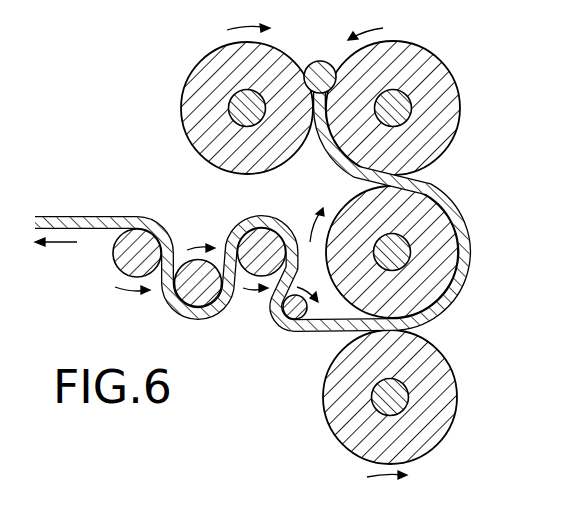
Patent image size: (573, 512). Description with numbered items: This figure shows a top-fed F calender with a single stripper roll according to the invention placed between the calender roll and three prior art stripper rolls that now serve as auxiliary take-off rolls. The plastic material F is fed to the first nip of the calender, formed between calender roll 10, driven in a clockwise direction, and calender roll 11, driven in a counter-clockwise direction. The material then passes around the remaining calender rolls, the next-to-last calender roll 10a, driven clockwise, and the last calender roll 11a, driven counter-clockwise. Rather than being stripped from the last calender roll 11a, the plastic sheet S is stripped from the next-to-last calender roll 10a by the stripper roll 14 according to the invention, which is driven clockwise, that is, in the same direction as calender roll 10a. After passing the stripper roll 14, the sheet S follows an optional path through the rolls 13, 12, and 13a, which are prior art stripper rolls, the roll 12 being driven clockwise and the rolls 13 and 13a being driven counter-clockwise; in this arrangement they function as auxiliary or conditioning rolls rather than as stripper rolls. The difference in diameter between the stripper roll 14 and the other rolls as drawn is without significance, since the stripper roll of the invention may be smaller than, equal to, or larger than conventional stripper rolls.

The calender roll 10 is at (192, 93).
The calender roll 11 is at (438, 105).
The calender roll 10a is at (435, 237).
The calender roll 11a is at (343, 413).
The stripper roll 12 is at (199, 290).
The stripper roll 13 is at (253, 243).
The stripper roll 13a is at (128, 257).
The stripper roll 14 is at (293, 330).
The plastic material F is at (322, 73).
The plastic sheet S is at (70, 225).